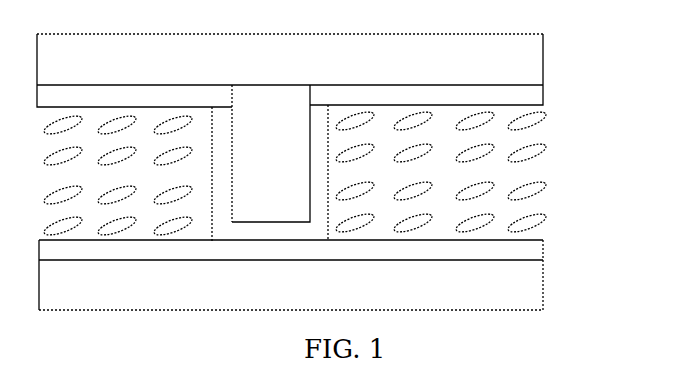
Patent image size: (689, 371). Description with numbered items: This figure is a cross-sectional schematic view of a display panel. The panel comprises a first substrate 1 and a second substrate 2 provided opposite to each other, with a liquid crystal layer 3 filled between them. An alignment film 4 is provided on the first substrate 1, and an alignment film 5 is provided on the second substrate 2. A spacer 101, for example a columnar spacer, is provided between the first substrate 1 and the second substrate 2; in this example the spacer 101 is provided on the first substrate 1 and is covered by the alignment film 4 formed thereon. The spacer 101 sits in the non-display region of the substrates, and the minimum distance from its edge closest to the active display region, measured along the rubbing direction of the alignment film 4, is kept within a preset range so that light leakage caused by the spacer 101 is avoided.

The first substrate 1 is at (522, 53).
The alignment film 4 is at (522, 98).
The spacer 101 is at (271, 153).
The liquid crystal layer 3 is at (538, 156).
The alignment film 5 is at (522, 250).
The second substrate 2 is at (522, 293).